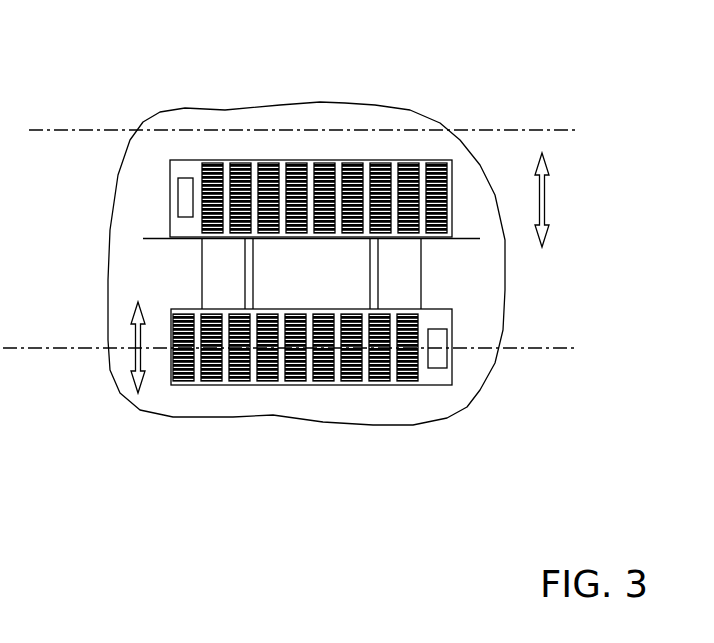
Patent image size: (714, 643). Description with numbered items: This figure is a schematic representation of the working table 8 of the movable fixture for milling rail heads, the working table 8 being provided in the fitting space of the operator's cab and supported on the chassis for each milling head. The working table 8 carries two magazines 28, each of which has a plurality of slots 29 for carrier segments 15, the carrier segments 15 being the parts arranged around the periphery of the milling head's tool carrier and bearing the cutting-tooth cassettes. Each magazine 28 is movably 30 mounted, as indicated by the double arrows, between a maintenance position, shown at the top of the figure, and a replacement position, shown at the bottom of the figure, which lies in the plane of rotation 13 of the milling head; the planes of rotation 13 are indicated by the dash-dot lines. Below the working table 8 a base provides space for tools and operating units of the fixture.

The working table 8 is at (597, 243).
The plane of rotation 13 is at (87, 130).
The carrier segment 15 is at (282, 388).
The magazine 28 is at (372, 282).
The slot 29 is at (184, 197).
The movable mounting 30 is at (545, 198).